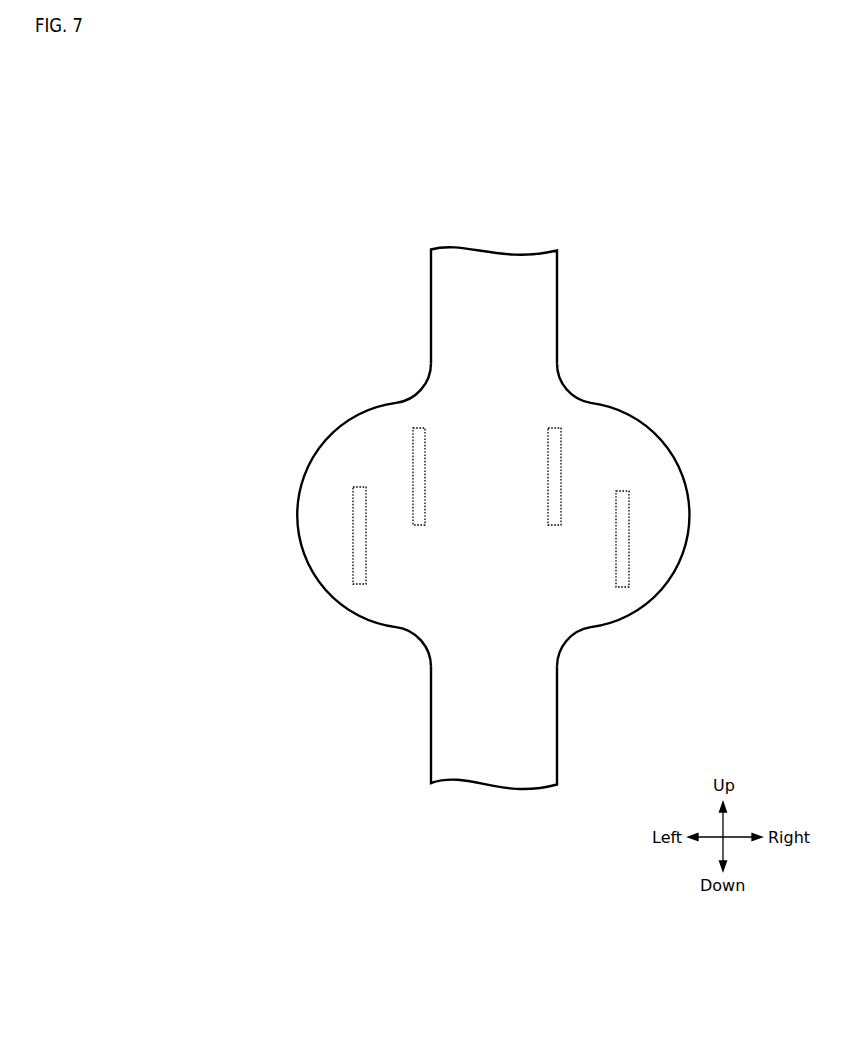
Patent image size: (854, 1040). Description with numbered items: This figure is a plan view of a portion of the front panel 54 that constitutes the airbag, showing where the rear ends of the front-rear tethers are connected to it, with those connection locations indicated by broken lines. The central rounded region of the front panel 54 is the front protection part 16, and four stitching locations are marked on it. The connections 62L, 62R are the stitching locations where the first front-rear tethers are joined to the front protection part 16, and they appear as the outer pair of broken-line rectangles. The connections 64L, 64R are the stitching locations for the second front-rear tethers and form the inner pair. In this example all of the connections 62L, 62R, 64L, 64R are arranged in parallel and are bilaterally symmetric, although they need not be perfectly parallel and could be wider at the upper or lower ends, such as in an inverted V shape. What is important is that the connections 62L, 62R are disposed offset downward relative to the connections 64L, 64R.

The front protection part 16 is at (644, 431).
The front panel 54 is at (510, 241).
The connection 62L is at (353, 539).
The connection 62R is at (629, 538).
The connection 64L is at (419, 428).
The connection 64R is at (553, 427).